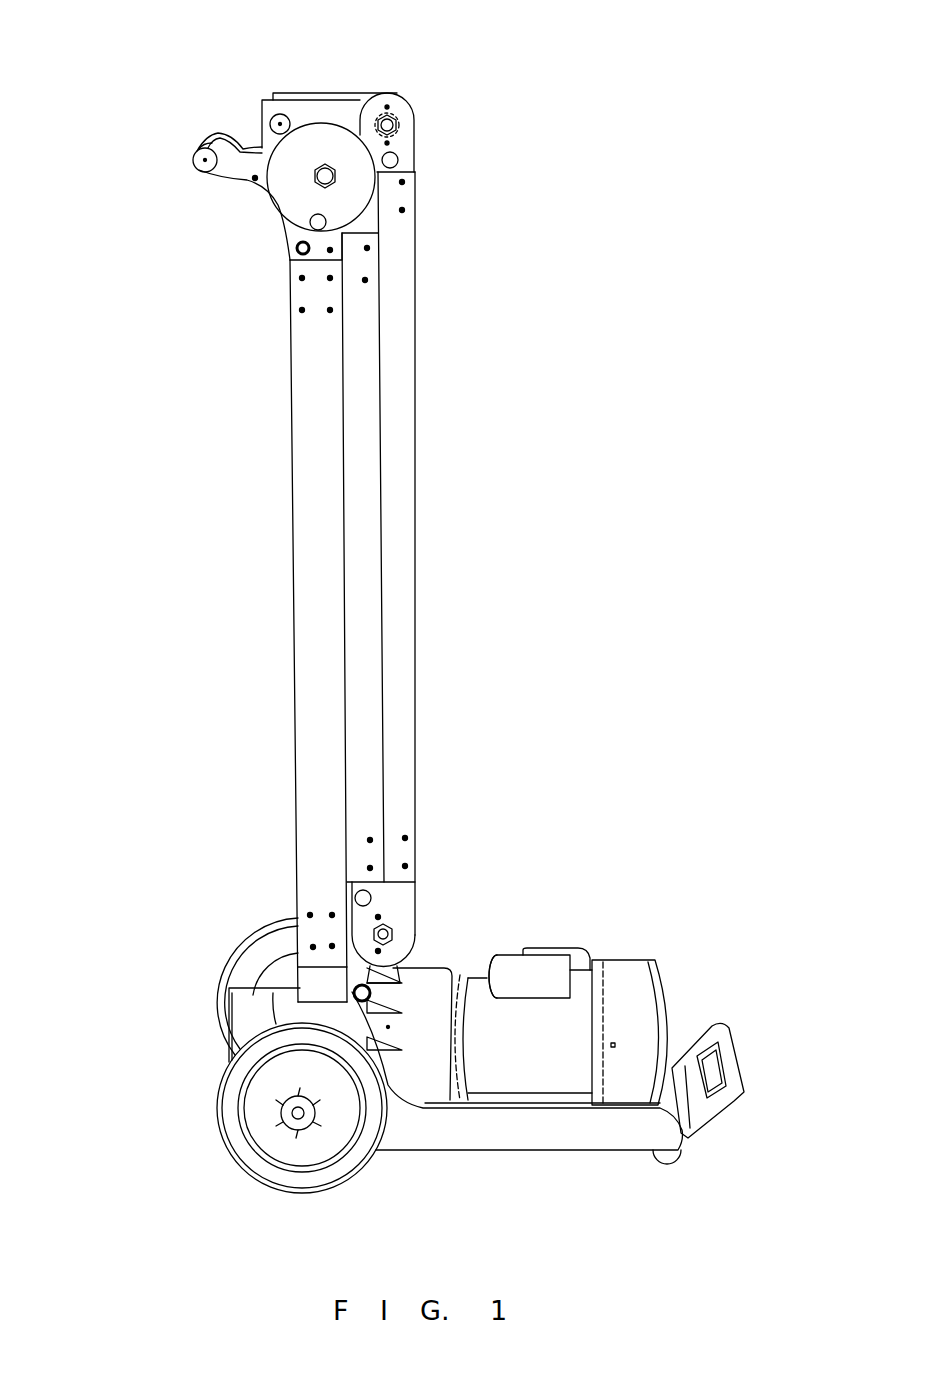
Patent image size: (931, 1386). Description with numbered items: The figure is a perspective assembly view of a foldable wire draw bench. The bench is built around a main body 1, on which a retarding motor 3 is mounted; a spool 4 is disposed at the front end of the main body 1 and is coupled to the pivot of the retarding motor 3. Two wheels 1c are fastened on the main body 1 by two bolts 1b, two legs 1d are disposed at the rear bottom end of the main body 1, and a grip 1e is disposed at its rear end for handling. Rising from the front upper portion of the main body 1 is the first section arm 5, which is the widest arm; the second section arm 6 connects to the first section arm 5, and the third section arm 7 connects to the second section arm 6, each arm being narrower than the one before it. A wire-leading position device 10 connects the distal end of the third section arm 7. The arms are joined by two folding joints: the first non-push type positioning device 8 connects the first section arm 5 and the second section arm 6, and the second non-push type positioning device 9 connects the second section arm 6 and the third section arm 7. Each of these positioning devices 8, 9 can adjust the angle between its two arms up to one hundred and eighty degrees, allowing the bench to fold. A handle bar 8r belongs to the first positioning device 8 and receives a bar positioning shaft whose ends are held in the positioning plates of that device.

The main body 1 is at (428, 1133).
The bolts 1b is at (287, 1127).
The wheels 1c is at (267, 927).
The legs 1d is at (680, 1157).
The grip 1e is at (723, 1040).
The retarding motor 3 is at (582, 988).
The spool 4 is at (235, 1020).
The first section arm 5 is at (298, 602).
The second section arm 6 is at (363, 545).
The third section arm 7 is at (407, 478).
The first non-push type positioning device 8 is at (282, 192).
The handle bar 8r is at (205, 137).
The second non-push type positioning device 9 is at (392, 915).
The wire-leading position device 10 is at (338, 110).